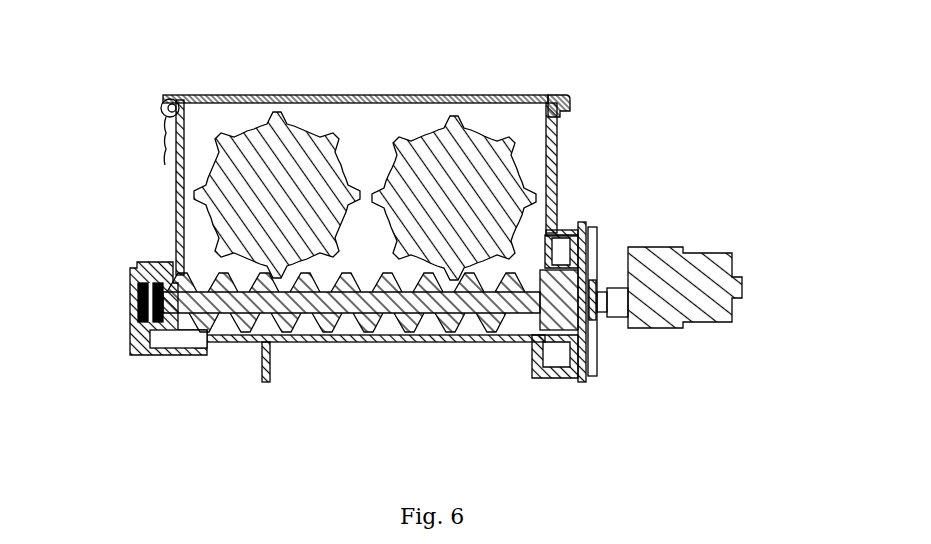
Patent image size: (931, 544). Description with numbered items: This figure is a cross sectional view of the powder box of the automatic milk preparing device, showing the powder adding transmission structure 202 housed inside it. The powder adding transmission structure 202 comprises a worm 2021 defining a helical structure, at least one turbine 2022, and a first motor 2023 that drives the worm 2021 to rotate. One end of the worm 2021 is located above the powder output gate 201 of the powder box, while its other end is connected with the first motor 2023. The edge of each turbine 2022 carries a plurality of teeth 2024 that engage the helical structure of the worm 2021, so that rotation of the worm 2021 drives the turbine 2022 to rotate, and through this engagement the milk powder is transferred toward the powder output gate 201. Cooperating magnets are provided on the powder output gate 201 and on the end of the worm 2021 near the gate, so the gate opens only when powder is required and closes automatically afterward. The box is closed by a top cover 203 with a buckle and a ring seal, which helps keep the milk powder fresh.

The powder output gate 201 is at (168, 353).
The powder adding transmission structure 202 is at (540, 168).
The top cover 203 is at (295, 95).
The worm 2021 is at (370, 340).
The turbine 2022 is at (250, 168).
The first motor 2023 is at (676, 250).
The teeth 2024 is at (456, 120).